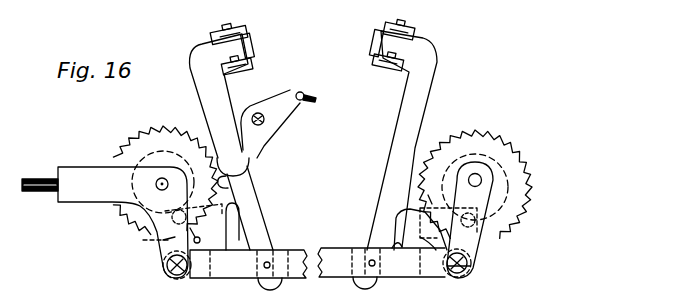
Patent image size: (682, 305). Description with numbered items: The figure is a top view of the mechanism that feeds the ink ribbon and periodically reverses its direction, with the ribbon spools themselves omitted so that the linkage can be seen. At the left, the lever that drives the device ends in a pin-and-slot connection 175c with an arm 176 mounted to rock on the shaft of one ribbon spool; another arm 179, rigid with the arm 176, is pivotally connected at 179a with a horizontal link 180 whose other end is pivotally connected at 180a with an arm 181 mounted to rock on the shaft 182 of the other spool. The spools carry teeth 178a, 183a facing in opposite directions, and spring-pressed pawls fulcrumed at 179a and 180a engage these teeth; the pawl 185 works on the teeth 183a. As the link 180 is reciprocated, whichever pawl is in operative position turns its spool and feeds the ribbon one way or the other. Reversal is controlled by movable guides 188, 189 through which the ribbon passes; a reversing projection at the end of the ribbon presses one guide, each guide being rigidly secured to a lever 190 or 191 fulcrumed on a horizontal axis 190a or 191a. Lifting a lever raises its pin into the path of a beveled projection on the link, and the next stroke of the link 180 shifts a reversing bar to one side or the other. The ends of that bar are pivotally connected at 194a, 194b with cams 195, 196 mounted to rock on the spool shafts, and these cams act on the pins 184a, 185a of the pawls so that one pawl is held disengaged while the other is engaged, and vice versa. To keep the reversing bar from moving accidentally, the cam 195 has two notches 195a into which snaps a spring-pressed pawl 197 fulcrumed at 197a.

The pin-and-slot connection 175c is at (30, 193).
The arm 176 is at (123, 222).
The teeth 178a is at (150, 128).
The arm 179 is at (164, 234).
The pivot connection 179a is at (173, 278).
The horizontal link 180 is at (333, 243).
The pivot connection 180a is at (482, 265).
The arm 181 is at (470, 220).
The shaft 182 is at (482, 178).
The teeth 183a is at (483, 127).
The pin 184a is at (262, 283).
The spring-pressed pawl 185 is at (438, 230).
The pin 185a is at (449, 273).
The movable guide 188 is at (252, 36).
The movable guide 189 is at (375, 37).
The lever 190 is at (219, 96).
The horizontal axis 190a is at (244, 70).
The lever 191 is at (425, 112).
The horizontal axis 191a is at (385, 72).
The pivot connection 194a is at (182, 214).
The pivot connection 194b is at (484, 218).
The cam 195 is at (226, 228).
The notches 195a is at (228, 183).
The cam 196 is at (428, 195).
The spring-pressed pawl 197 is at (252, 153).
The fulcrum 197a is at (266, 119).